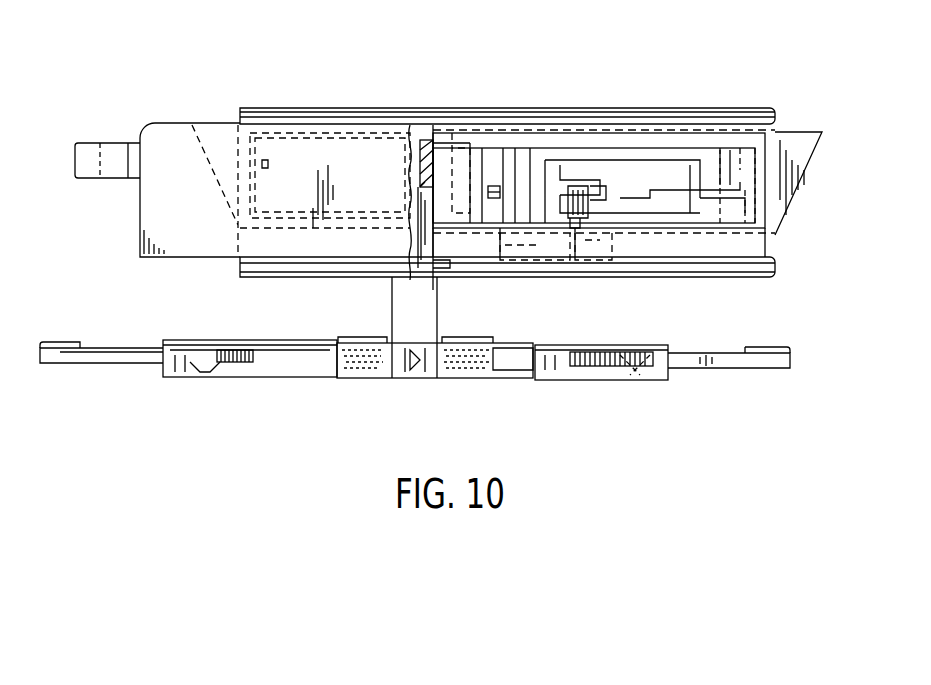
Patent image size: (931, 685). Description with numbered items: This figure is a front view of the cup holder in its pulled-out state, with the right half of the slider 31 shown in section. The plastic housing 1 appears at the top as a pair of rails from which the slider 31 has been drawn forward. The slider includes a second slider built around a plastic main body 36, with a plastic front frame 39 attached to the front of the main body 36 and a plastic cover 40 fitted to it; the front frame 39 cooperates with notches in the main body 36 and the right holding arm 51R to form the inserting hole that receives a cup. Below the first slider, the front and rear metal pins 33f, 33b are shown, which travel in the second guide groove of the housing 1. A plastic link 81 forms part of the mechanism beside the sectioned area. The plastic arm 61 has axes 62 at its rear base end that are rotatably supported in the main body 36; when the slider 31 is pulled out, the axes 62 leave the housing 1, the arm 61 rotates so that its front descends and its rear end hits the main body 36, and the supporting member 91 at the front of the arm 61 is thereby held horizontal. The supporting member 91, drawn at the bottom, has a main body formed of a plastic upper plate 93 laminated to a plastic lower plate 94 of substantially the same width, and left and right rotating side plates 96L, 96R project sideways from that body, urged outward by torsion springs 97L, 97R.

The housing 1 is at (720, 100).
The slider 31 is at (138, 215).
The front frame 39 is at (172, 142).
The main body 36 is at (445, 150).
The axes 62 is at (456, 150).
The cover 40 is at (503, 165).
The right holding arm 51R is at (655, 150).
The link 81 is at (428, 278).
The front metal pin 33f is at (577, 233).
The rear metal pin 33b is at (626, 263).
The arm 61 is at (417, 323).
The supporting member 91 is at (373, 383).
The upper plate 93 is at (517, 347).
The lower plate 94 is at (550, 375).
The left rotating side plate 96L is at (117, 357).
The right rotating side plate 96R is at (722, 365).
The left torsion spring 97L is at (237, 367).
The right torsion spring 97R is at (592, 375).